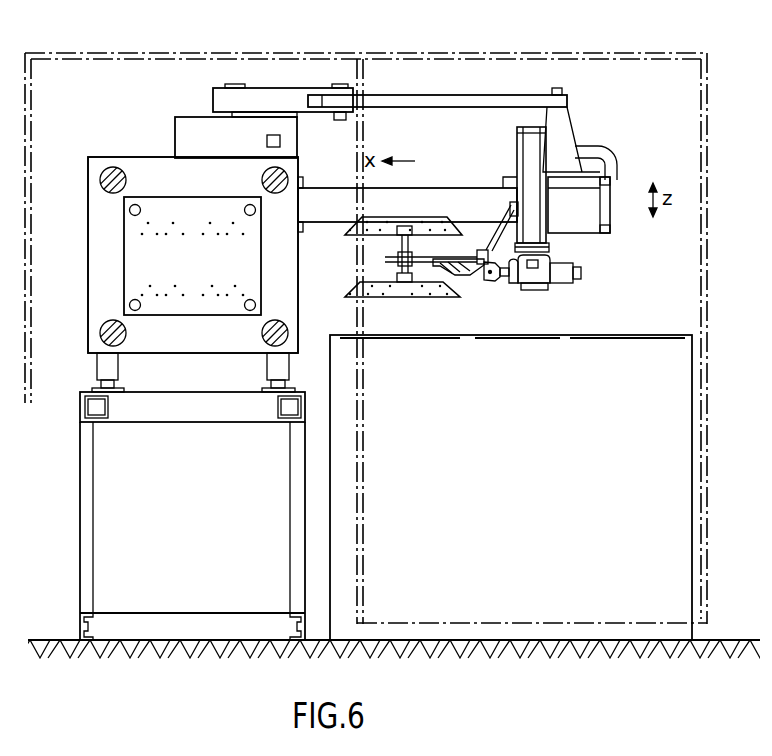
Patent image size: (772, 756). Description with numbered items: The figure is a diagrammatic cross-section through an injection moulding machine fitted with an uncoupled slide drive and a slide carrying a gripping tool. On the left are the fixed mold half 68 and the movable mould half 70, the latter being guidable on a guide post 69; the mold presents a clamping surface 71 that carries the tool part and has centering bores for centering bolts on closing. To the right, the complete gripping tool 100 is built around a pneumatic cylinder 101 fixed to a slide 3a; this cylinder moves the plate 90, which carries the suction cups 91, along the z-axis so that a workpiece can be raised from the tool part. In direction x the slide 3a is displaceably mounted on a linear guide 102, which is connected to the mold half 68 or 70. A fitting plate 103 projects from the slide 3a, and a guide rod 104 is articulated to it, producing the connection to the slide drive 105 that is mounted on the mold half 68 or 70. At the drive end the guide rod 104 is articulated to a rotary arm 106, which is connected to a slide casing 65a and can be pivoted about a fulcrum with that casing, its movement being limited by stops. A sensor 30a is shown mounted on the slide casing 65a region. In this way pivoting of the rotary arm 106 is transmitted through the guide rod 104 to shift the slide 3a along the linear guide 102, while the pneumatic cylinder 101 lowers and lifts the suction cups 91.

The slide 3a is at (594, 241).
The sensor 30a is at (274, 133).
The slide casing 65a is at (225, 138).
The fixed mold half 68 is at (153, 177).
The guide post 69 is at (110, 168).
The movable mould half 70 is at (193, 255).
The clamping surface 71 is at (186, 214).
The plate 90 is at (440, 216).
The suction cups 91 is at (460, 214).
The gripping tool 100 is at (508, 289).
The pneumatic cylinder 101 is at (535, 192).
The linear guide 102 is at (421, 208).
The fitting plate 103 is at (563, 136).
The guide rod 104 is at (385, 97).
The slide drive 105 is at (298, 83).
The rotary arm 106 is at (233, 98).